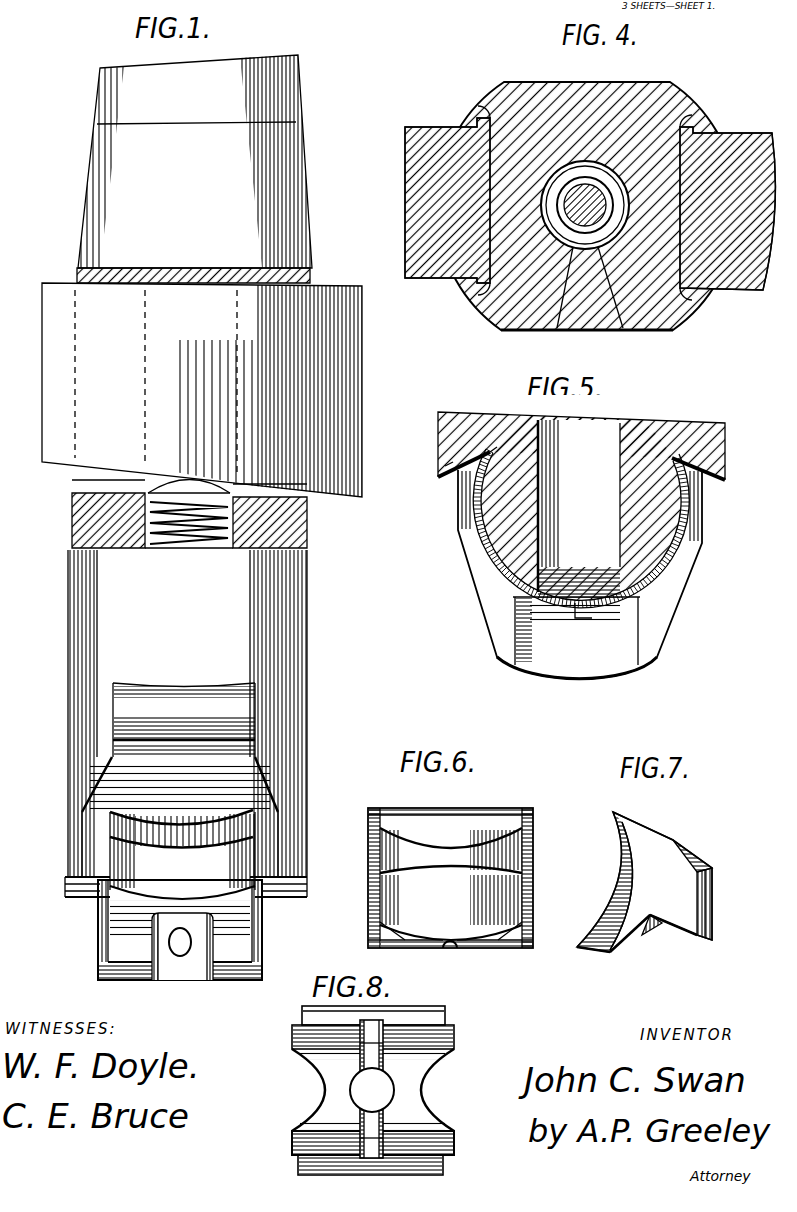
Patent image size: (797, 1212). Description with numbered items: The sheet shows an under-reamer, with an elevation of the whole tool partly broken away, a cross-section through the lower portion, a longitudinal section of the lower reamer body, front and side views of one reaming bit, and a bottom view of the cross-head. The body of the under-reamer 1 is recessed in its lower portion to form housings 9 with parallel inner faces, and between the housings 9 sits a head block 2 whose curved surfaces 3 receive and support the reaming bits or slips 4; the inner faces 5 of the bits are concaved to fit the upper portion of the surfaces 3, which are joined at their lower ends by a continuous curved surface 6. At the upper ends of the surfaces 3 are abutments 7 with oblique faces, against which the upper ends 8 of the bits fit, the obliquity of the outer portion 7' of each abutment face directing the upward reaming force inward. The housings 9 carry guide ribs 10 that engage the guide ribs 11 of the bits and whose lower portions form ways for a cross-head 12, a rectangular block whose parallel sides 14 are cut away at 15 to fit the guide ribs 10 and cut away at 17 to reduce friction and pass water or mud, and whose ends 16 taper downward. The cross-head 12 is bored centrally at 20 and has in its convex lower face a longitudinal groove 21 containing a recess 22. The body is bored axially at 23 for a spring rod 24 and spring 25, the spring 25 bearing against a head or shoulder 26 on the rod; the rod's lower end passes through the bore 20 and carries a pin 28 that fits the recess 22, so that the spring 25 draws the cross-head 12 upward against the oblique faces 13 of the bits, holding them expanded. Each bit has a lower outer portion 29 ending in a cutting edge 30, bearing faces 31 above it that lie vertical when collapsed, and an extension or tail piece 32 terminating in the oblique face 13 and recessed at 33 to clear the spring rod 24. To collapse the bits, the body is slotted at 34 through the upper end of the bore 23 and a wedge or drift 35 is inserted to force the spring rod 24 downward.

In FIG. 4, the body of the under-reamer 1 is at (679, 88).
In FIG. 5, the head block 2 is at (658, 508).
In FIG. 4, the curved surfaces 3 is at (700, 109).
In FIG. 5, the curved surfaces 3 is at (475, 522).
In FIG. 1, the reaming bits or slips 4 is at (245, 857).
In FIG. 4, the reaming bits or slips 4 is at (405, 213).
In FIG. 6, the reaming bits or slips 4 is at (451, 907).
In FIG. 7, the reaming bits or slips 4 is at (644, 882).
In FIG. 7, the inner faces 5 is at (616, 876).
In FIG. 5, the curved surface 6 is at (576, 620).
In FIG. 1, the abutments 7 is at (180, 729).
In FIG. 5, the abutments 7 is at (577, 475).
In FIG. 5, the outer portion of the abutment face 7' is at (584, 450).
In FIG. 1, the upper ends of the reaming bits 8 is at (115, 784).
In FIG. 6, the upper ends of the reaming bits 8 is at (488, 813).
In FIG. 7, the upper ends of the reaming bits 8 is at (663, 836).
In FIG. 1, the housings 9 is at (293, 791).
In FIG. 4, the housings 9 is at (503, 318).
In FIG. 5, the housings 9 is at (596, 574).
In FIG. 5, the guide ribs 10 is at (477, 581).
In FIG. 6, the guide ribs of the reaming bits 11 is at (533, 846).
In FIG. 7, the guide ribs of the reaming bits 11 is at (612, 909).
In FIG. 1, the cross-head 12 is at (150, 939).
In FIG. 8, the cross-head 12 is at (455, 1032).
In FIG. 7, the oblique faces 13 is at (587, 953).
In FIG. 1, the sides of the cross-head 14 is at (103, 913).
In FIG. 8, the sides of the cross-head 14 is at (293, 1040).
In FIG. 8, the cut-aways 15 is at (300, 1016).
In FIG. 8, the ends of the cross-head 16 is at (432, 1012).
In FIG. 8, the cut-aways 17 is at (322, 1080).
In FIG. 8, the central bore 20 is at (391, 1087).
In FIG. 8, the longitudinal groove 21 is at (379, 1020).
In FIG. 8, the recess 22 is at (362, 1117).
In FIG. 4, the axial bore 23 is at (555, 305).
In FIG. 5, the axial bore 23 is at (579, 509).
In FIG. 1, the spring rod 24 is at (186, 976).
In FIG. 4, the spring rod 24 is at (586, 195).
In FIG. 4, the spring 25 is at (614, 304).
In FIG. 1, the head or shoulder 26 is at (190, 478).
In FIG. 1, the pin 28 is at (176, 956).
In FIG. 1, the lower portion of the outer face 29 is at (118, 865).
In FIG. 7, the lower portion of the outer face 29 is at (715, 901).
In FIG. 7, the cutting edge 30 is at (705, 941).
In FIG. 1, the bearing faces 31 is at (118, 822).
In FIG. 6, the bearing faces 31 is at (451, 850).
In FIG. 7, the bearing faces 31 is at (712, 861).
In FIG. 7, the extension or tail piece 32 is at (657, 928).
In FIG. 6, the recess 33 is at (450, 951).
In FIG. 1, the slot 34 is at (86, 488).
In FIG. 1, the wedge or drift 35 is at (355, 383).